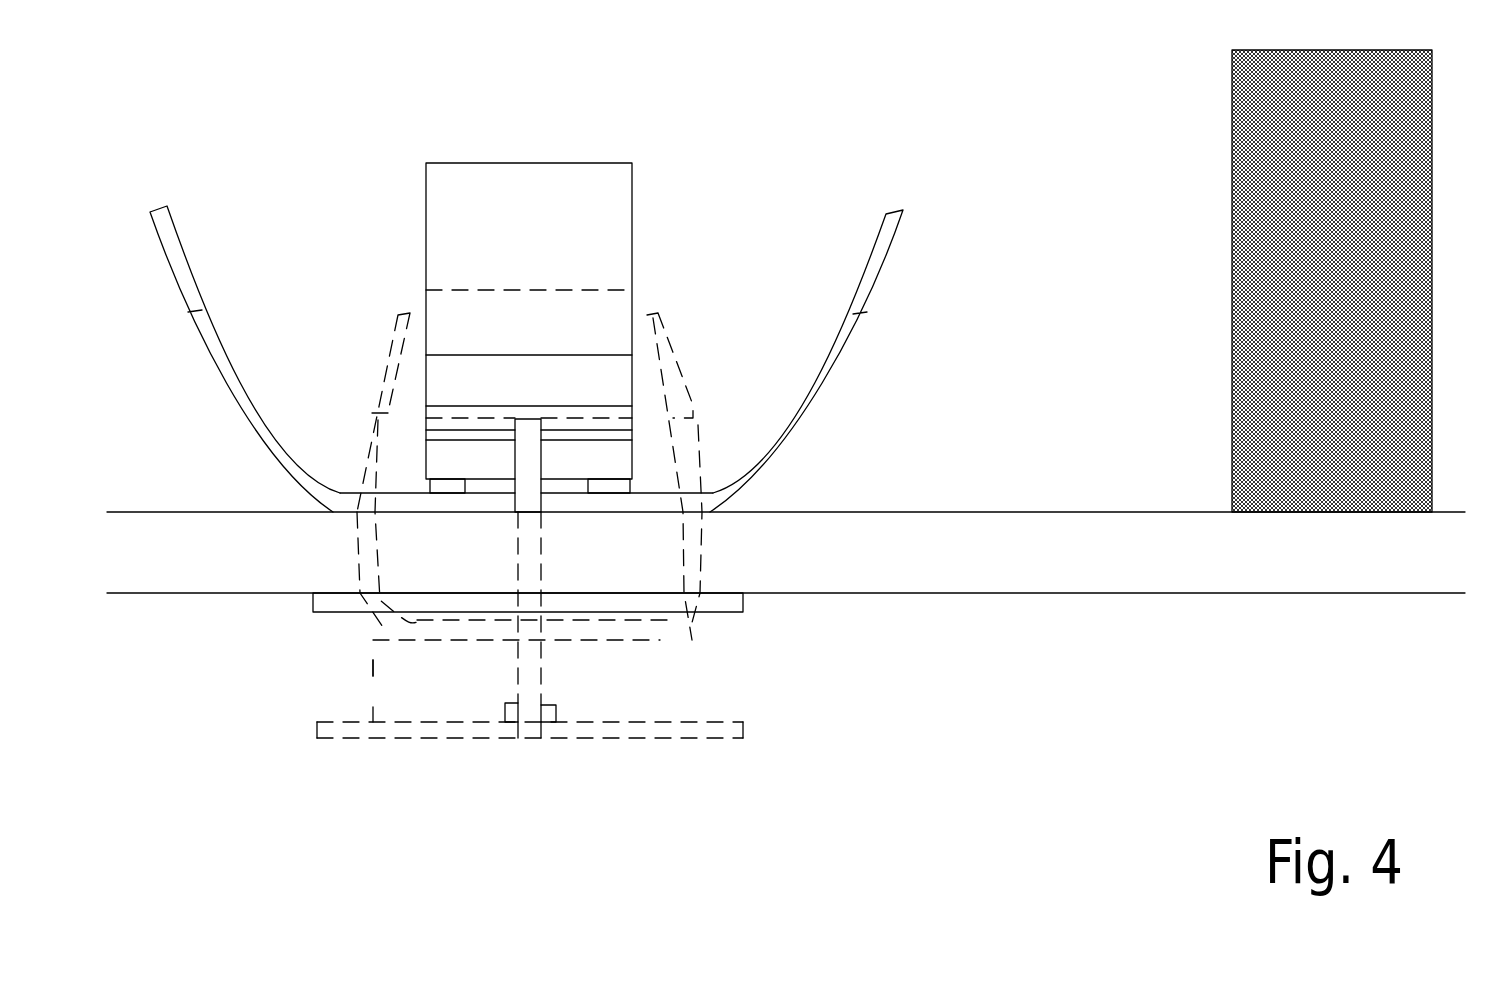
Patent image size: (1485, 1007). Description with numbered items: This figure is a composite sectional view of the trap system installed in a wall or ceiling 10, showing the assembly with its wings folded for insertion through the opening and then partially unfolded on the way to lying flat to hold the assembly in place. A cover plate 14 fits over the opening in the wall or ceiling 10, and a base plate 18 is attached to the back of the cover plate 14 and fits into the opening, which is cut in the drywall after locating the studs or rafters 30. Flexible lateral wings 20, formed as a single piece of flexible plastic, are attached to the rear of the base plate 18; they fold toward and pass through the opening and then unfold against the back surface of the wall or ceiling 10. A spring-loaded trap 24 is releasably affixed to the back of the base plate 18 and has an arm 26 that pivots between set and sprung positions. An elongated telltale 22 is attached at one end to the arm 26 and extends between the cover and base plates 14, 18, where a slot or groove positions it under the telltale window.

The wall or ceiling 10 is at (133, 565).
The cover plate 14 is at (743, 596).
The base plate 18 is at (372, 680).
The flexible lateral wings 20 is at (160, 207).
The elongated telltale 22 is at (538, 462).
The spring-loaded trap 24 is at (440, 162).
The trap arm 26 is at (425, 462).
The studs or rafters 30 is at (1232, 107).